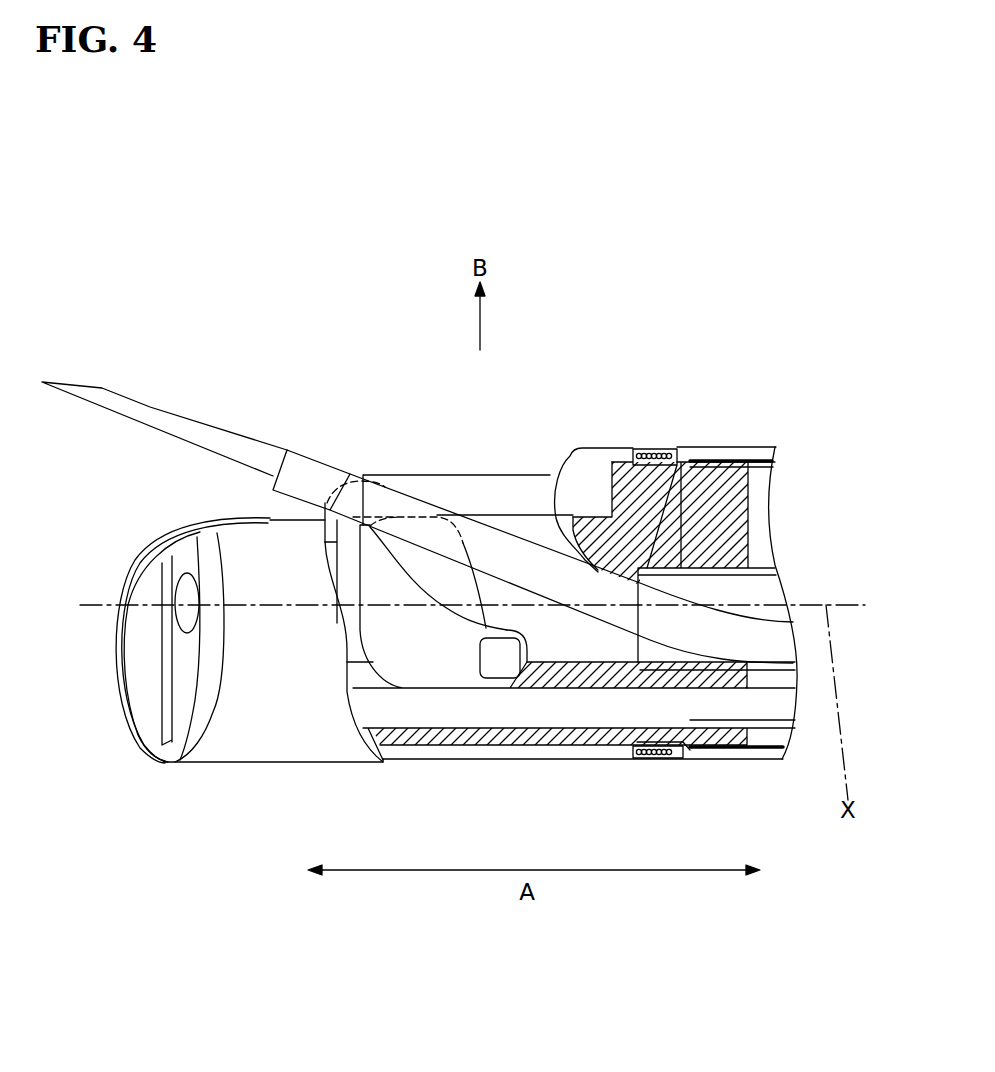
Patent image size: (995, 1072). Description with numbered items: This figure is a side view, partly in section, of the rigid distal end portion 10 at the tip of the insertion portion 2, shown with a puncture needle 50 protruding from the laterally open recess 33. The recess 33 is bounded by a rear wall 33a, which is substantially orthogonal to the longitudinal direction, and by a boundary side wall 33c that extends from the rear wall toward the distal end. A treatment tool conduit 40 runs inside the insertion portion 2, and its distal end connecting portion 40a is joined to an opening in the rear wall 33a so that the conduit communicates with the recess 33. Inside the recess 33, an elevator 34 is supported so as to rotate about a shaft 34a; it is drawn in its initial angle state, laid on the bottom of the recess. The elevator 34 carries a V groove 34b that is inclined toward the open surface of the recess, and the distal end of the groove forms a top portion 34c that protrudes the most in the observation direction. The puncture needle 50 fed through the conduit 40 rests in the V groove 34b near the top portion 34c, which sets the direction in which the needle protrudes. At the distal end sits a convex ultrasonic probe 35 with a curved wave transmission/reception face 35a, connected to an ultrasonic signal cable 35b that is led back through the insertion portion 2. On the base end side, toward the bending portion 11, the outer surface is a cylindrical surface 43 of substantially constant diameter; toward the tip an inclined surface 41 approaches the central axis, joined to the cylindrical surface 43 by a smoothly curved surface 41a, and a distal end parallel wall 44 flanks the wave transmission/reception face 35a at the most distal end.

The rigid distal end portion 10 is at (265, 808).
The bending portion 11 is at (724, 545).
The insertion portion 2 is at (762, 450).
The laterally open recess 33 is at (631, 496).
The rear wall 33a is at (557, 468).
The boundary side wall 33c is at (503, 474).
The elevator 34 is at (427, 657).
The shaft 34a is at (494, 665).
The V groove 34b is at (433, 577).
The top portion 34c is at (367, 476).
The ultrasonic probe 35 is at (130, 556).
The wave transmission/reception face 35a is at (165, 538).
The ultrasonic signal cable 35b is at (592, 712).
The treatment tool conduit 40 is at (760, 570).
The distal end connecting portion 40a is at (677, 450).
The inclined surface 41 is at (180, 685).
The smoothly curved surface 41a is at (187, 730).
The cylindrical surface 43 is at (310, 723).
The distal end parallel wall 44 is at (137, 688).
The puncture needle 50 is at (251, 449).